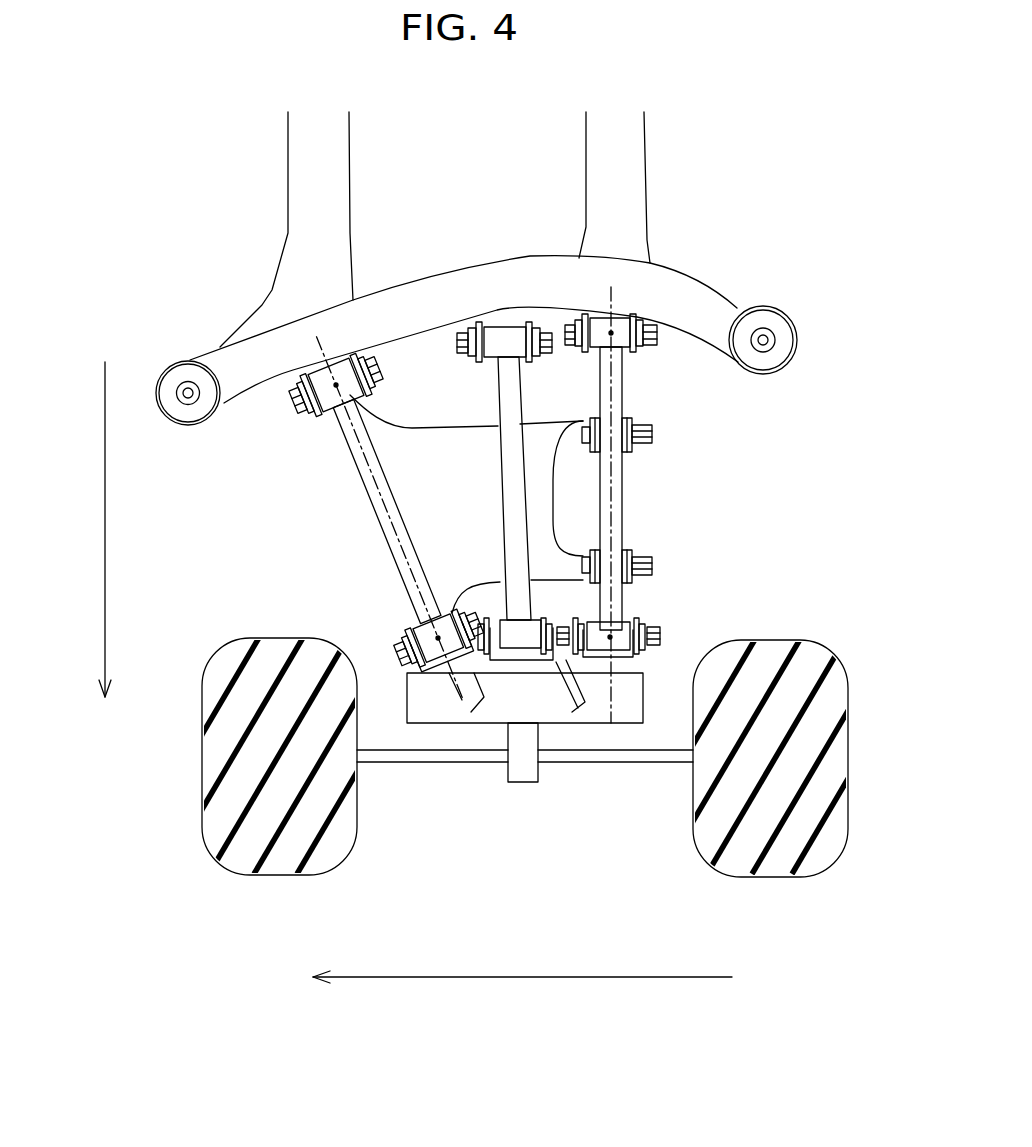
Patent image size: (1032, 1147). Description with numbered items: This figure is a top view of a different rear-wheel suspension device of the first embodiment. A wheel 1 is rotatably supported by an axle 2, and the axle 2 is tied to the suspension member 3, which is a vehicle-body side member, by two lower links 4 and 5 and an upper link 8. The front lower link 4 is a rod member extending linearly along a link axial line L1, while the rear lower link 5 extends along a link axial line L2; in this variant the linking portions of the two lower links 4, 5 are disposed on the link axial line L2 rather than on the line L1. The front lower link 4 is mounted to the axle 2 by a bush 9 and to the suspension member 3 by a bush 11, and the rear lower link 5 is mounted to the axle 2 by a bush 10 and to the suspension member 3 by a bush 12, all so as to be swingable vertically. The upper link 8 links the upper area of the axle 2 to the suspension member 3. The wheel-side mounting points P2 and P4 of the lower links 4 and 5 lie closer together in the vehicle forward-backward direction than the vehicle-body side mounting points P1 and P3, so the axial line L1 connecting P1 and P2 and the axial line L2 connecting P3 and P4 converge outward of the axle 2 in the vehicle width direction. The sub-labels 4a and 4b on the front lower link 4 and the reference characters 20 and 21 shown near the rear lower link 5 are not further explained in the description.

The wheel 1 is at (825, 801).
The axle 2 is at (611, 713).
The suspension member 3 is at (494, 292).
The front lower link 4 is at (303, 497).
The link rod 4a is at (377, 503).
The link bracket 4b is at (453, 515).
The rear lower link 5 is at (617, 473).
The upper link 8 is at (507, 402).
The bush 9 is at (436, 660).
The bush 10 is at (627, 620).
The bush 11 is at (323, 392).
The bush 12 is at (602, 333).
The bush 20 is at (625, 547).
The bush 21 is at (625, 420).
The link axial line L1 is at (363, 457).
The link axial line L2 is at (617, 500).
The vehicle-body side mounting point P1 is at (336, 385).
The wheel-side mounting point P2 is at (438, 638).
The vehicle-body side mounting point P3 is at (611, 333).
The wheel-side mounting point P4 is at (610, 637).